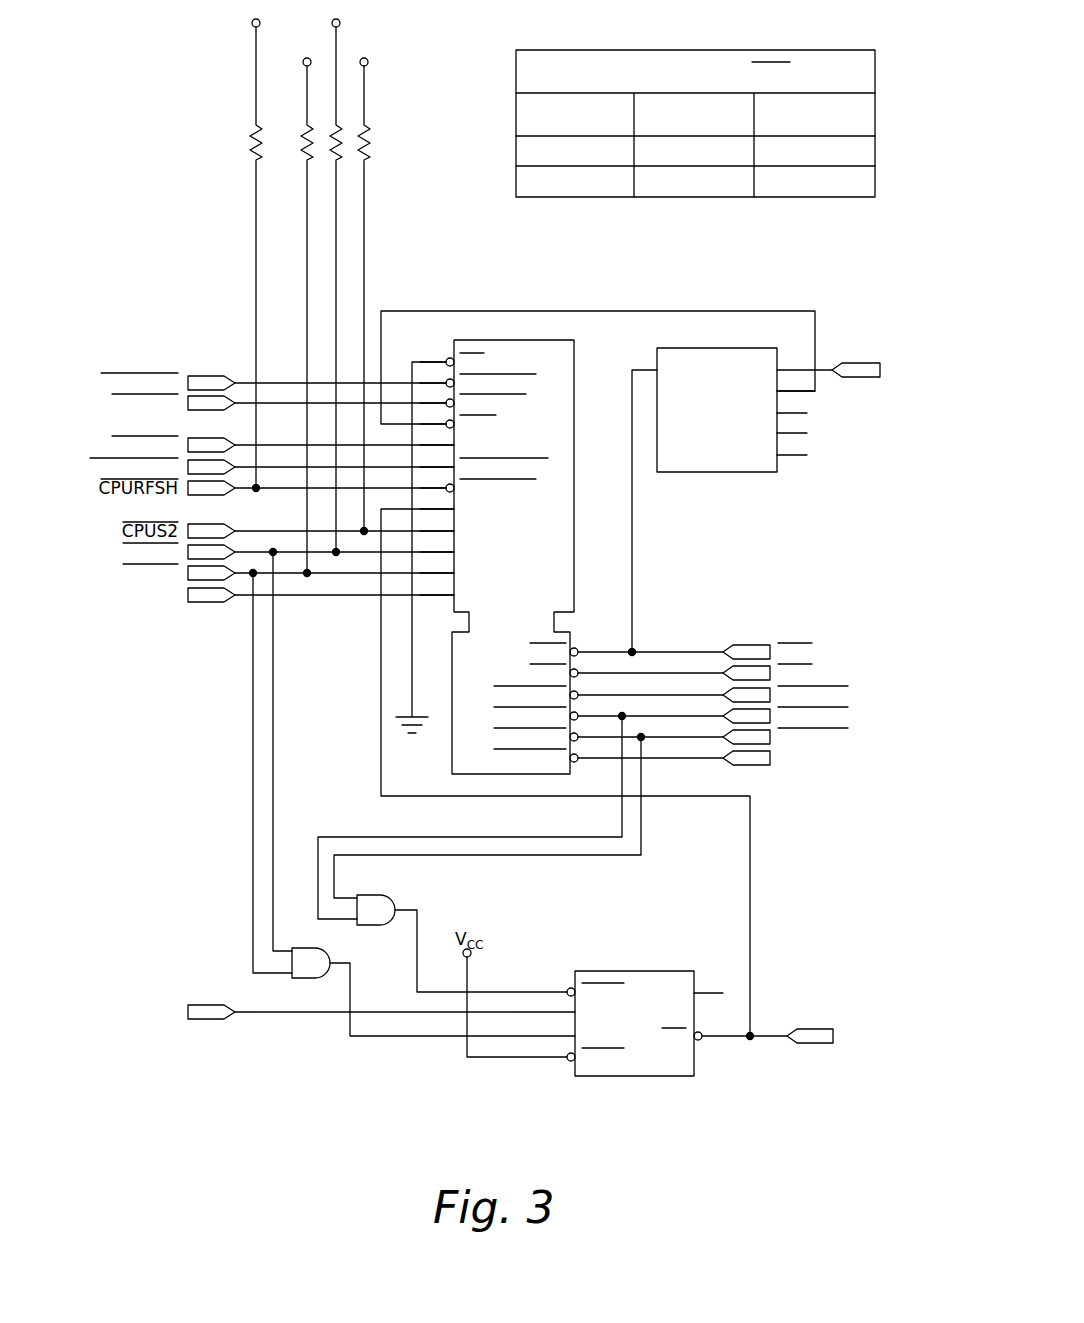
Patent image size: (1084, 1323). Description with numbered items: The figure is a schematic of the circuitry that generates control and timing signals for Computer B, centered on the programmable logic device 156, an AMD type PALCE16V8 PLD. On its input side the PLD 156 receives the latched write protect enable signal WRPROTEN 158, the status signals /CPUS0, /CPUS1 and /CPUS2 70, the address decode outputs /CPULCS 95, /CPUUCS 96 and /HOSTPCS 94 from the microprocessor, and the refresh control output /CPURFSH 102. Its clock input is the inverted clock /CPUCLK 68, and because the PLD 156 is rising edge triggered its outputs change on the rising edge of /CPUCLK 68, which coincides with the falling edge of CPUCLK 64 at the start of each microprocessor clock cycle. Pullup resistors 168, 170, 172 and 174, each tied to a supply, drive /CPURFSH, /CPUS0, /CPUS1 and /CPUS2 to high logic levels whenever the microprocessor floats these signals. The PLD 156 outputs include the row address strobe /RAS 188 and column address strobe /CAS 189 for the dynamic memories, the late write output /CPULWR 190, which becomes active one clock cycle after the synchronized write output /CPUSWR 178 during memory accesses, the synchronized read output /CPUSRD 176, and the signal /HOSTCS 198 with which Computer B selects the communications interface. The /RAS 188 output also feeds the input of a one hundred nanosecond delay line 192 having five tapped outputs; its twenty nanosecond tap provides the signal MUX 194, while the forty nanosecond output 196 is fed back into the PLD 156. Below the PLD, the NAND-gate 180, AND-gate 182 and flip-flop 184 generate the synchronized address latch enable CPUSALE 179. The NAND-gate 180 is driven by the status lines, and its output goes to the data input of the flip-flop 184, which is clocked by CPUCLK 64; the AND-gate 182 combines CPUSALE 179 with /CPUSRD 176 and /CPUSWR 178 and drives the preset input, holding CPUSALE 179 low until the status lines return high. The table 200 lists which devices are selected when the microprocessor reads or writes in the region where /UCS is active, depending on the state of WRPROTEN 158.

The table 200 is at (516, 84).
The pullup resistor 168 is at (250, 147).
The pullup resistor 170 is at (302, 150).
The pullup resistor 172 is at (334, 158).
The pullup resistor 174 is at (368, 143).
The programmable logic device 156 is at (574, 368).
The /HOSTPCS address decode output 94 is at (100, 376).
The /CPUUCS address decode output 96 is at (110, 403).
The /CPULCS address decode output 95 is at (110, 447).
The WRPROTEN latched write protect enable signal 158 is at (86, 478).
The /CPURFSH refresh control output 102 is at (113, 563).
The status signals /CPUS0, /CPUS1, /CPUS2 70 is at (108, 588).
The /CPUCLK clock signal 68 is at (108, 600).
The CPUCLK clock signal 64 is at (105, 1018).
The delay line 192 is at (675, 472).
The MUX signal 194 is at (906, 362).
The delay line output 196 is at (810, 393).
The /RAS output 188 is at (812, 652).
The /CAS output 189 is at (818, 676).
The /CPULWR late write output 190 is at (850, 698).
The /CPUSRD synchronized read output 176 is at (850, 717).
The /CPUSWR synchronized write output 178 is at (850, 739).
The /HOSTCS signal 198 is at (848, 760).
The AND-gate 182 is at (390, 896).
The NAND-gate 180 is at (302, 978).
The flip-flop 184 is at (608, 1076).
The CPUSALE synchronized address latch enable 179 is at (897, 1050).